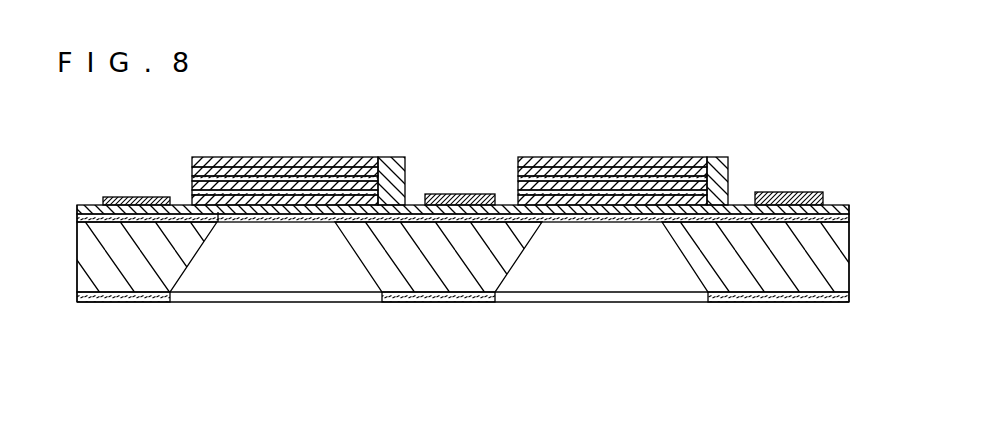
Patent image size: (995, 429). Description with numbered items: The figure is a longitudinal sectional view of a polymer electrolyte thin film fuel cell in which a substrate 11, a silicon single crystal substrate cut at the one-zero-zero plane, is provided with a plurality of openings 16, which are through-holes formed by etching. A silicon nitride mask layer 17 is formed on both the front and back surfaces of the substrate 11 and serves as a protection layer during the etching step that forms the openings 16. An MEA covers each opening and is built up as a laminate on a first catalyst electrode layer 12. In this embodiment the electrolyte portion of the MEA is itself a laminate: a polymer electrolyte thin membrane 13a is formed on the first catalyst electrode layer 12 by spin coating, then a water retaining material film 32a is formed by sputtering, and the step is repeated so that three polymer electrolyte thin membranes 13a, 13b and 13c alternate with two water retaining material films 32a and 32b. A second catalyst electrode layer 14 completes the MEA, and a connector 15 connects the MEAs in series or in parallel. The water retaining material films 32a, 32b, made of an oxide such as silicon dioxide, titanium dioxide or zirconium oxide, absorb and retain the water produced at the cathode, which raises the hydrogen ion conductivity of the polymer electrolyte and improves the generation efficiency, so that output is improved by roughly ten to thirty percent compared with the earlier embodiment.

The substrate 11 is at (440, 283).
The first catalyst electrode layer 12 is at (178, 206).
The polymer electrolyte thin membrane 13a is at (218, 200).
The polymer electrolyte thin membrane 13b is at (278, 174).
The polymer electrolyte thin membrane 13c is at (332, 171).
The second catalyst electrode layer 14 is at (397, 157).
The connector 15 is at (462, 194).
The openings 16 is at (612, 274).
The mask layer 17 is at (760, 300).
The water retaining material film 32a is at (572, 200).
The water retaining material film 32b is at (666, 196).